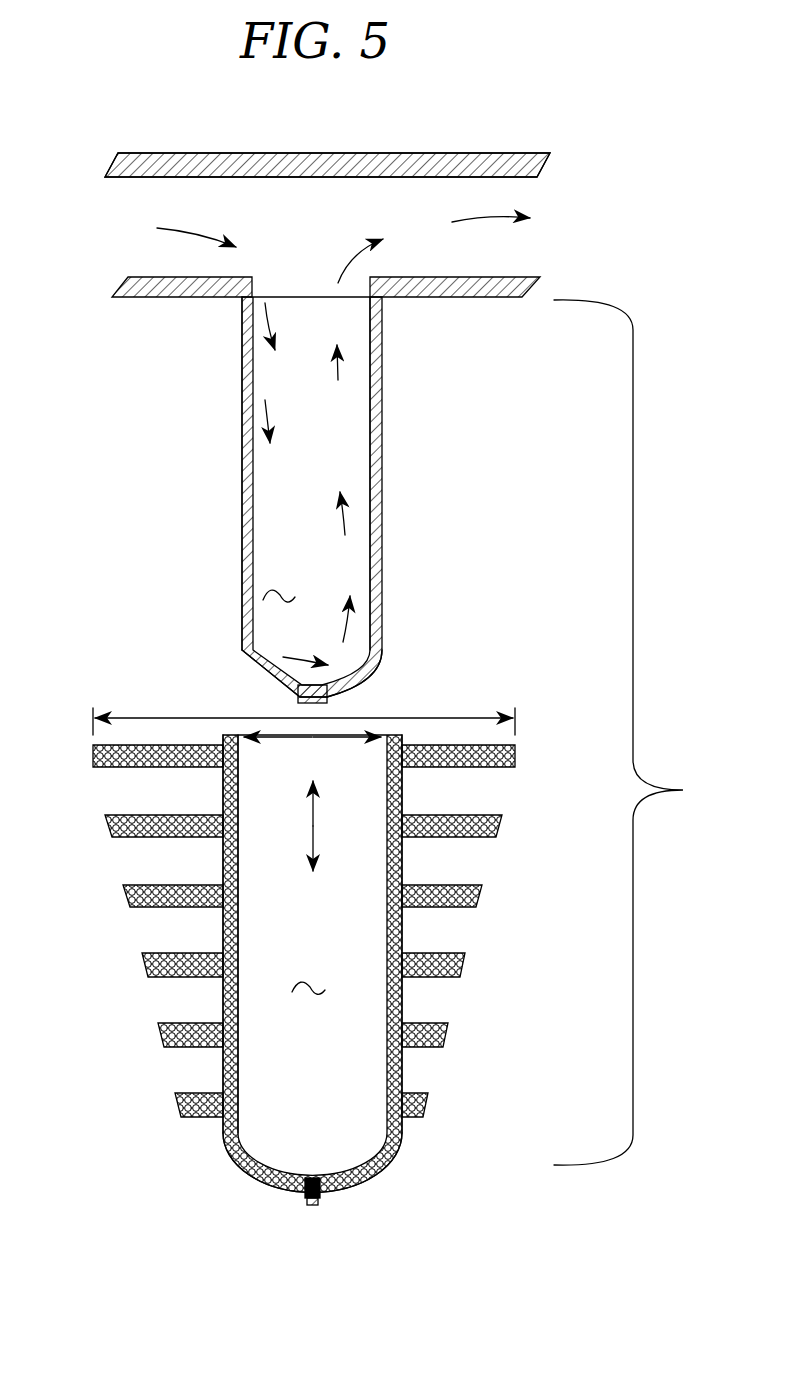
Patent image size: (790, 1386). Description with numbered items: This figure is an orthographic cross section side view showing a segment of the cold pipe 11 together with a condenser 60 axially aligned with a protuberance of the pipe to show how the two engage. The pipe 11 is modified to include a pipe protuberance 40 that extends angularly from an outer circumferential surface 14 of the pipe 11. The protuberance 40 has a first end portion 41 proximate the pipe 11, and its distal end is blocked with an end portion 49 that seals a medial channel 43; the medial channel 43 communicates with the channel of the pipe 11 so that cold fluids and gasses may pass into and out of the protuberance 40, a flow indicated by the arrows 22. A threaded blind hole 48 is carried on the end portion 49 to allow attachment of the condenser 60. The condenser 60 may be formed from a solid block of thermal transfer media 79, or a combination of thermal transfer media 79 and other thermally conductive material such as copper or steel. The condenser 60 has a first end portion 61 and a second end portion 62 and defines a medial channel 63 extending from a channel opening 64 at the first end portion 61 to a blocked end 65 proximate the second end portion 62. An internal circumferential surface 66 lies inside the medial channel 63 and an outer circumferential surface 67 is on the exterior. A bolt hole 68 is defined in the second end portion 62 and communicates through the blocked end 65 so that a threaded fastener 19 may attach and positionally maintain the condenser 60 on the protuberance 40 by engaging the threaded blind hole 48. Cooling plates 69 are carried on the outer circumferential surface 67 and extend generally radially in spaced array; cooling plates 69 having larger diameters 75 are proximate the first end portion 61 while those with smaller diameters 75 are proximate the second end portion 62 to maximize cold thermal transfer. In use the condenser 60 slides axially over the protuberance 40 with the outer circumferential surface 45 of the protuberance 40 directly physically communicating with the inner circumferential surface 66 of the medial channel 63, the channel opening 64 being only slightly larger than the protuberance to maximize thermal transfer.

The pipe 11 is at (180, 151).
The outer circumferential surface 14 is at (397, 155).
The threaded fastener 19 is at (311, 1204).
The fluid flow 22 is at (270, 322).
The pipe protuberance 40 is at (230, 495).
The first end portion 41 is at (383, 305).
The medial channel 43 is at (278, 590).
The outer circumferential surface 45 is at (242, 420).
The threaded blind hole 48 is at (327, 700).
The end portion 49 is at (283, 683).
The condenser 60 is at (395, 1166).
The first end portion 61 is at (385, 740).
The second end portion 62 is at (225, 1135).
The medial channel 63 is at (308, 984).
The channel opening 64 is at (305, 740).
The blocked end 65 is at (282, 1192).
The internal circumferential surface 66 is at (238, 1078).
The outer circumferential surface 67 is at (223, 858).
The bolt hole 68 is at (338, 1193).
The cooling plates 69 is at (95, 755).
The diameters 75 is at (140, 715).
The thermal transfer media 79 is at (205, 767).